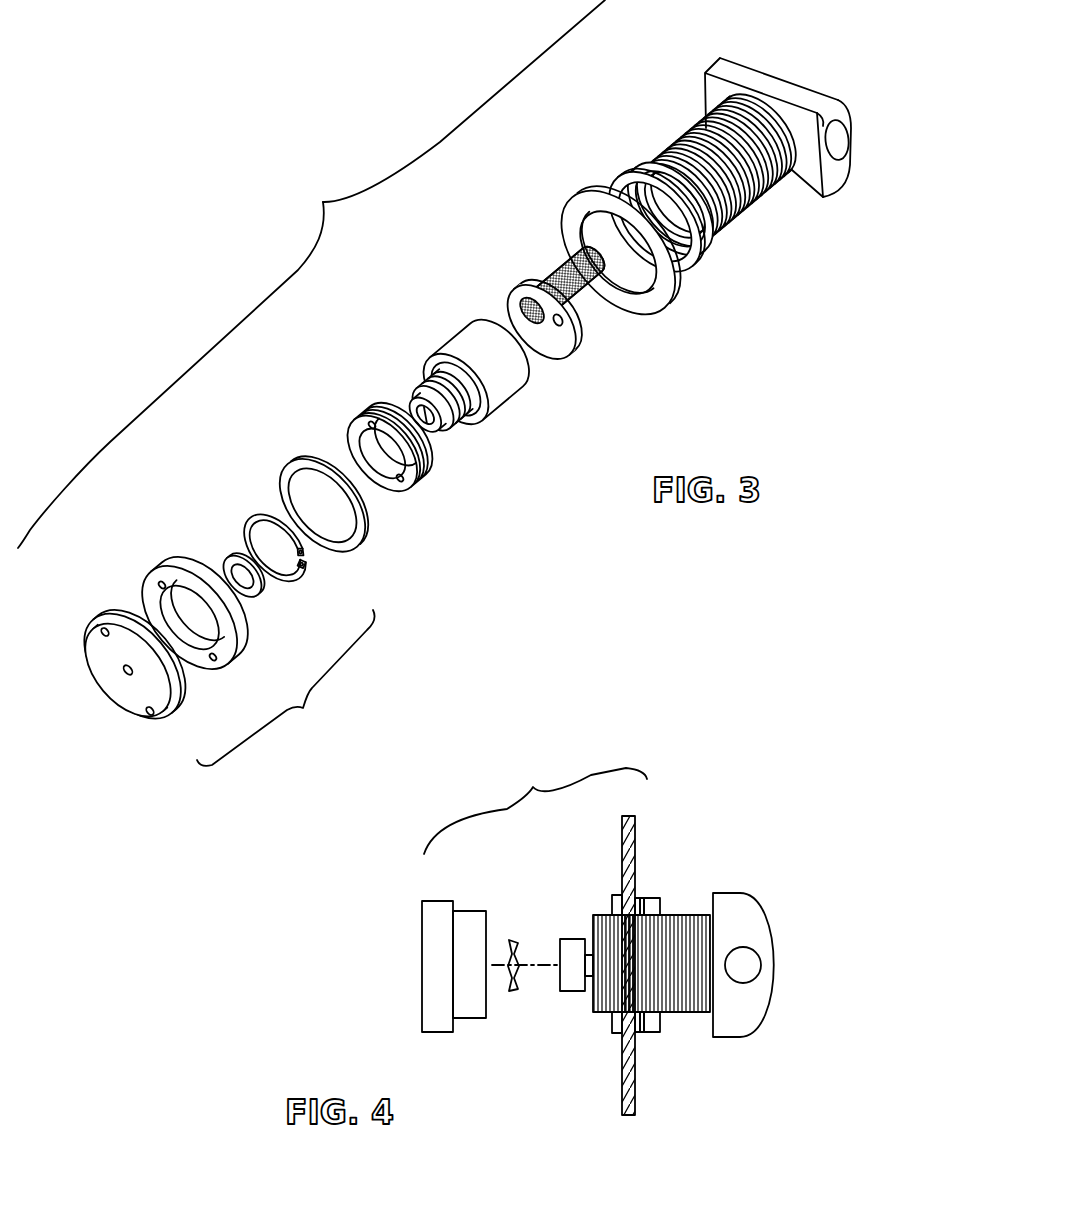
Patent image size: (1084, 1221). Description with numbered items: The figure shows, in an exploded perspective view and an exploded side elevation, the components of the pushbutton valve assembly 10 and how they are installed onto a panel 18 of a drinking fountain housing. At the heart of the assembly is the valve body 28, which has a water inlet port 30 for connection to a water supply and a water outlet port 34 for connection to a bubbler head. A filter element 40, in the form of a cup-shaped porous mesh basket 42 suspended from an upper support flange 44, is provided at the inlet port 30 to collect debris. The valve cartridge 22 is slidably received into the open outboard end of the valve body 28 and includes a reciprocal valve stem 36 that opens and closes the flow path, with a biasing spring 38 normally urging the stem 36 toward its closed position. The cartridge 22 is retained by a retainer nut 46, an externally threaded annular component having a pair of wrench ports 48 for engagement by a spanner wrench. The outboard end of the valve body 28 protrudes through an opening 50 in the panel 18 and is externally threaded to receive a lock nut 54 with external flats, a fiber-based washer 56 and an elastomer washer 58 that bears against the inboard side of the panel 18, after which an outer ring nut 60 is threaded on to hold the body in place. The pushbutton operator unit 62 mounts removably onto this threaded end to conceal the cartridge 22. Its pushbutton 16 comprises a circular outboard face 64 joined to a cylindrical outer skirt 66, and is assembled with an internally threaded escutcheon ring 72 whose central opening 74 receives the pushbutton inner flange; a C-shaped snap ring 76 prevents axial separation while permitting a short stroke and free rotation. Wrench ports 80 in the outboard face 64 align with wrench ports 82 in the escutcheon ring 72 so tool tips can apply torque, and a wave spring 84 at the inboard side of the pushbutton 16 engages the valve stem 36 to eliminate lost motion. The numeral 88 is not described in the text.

In FIG. 3, the pushbutton valve assembly 10 is at (323, 202).
In FIG. 4, the pushbutton valve assembly 10 is at (533, 787).
In FIG. 3, the pushbutton 16 is at (111, 661).
In FIG. 4, the pushbutton 16 is at (434, 930).
In FIG. 4, the panel 18 is at (636, 839).
In FIG. 3, the valve cartridge 22 is at (457, 366).
In FIG. 3, the valve body 28 is at (759, 130).
In FIG. 4, the valve body 28 is at (722, 963).
In FIG. 3, the water inlet port 30 is at (843, 123).
In FIG. 4, the water inlet port 30 is at (752, 972).
In FIG. 3, the water outlet port 34 is at (710, 62).
In FIG. 3, the valve stem 36 is at (443, 429).
In FIG. 4, the valve stem 36 is at (575, 939).
In FIG. 3, the biasing spring 38 is at (427, 373).
In FIG. 3, the filter element 40 is at (540, 275).
In FIG. 3, the porous mesh basket 42 is at (573, 318).
In FIG. 3, the upper support flange 44 is at (551, 301).
In FIG. 3, the retainer nut 46 is at (370, 435).
In FIG. 3, the wrench ports 48 is at (368, 424).
In FIG. 4, the opening 50 is at (631, 912).
In FIG. 3, the lock nut 54 is at (639, 163).
In FIG. 4, the lock nut 54 is at (655, 898).
In FIG. 3, the fiber-based washer 56 is at (603, 182).
In FIG. 4, the fiber-based washer 56 is at (644, 1031).
In FIG. 3, the elastomer washer 58 is at (566, 209).
In FIG. 4, the elastomer washer 58 is at (641, 1033).
In FIG. 3, the outer ring nut 60 is at (283, 464).
In FIG. 4, the outer ring nut 60 is at (614, 1023).
In FIG. 3, the pushbutton operator unit 62 is at (303, 708).
In FIG. 4, the pushbutton operator unit 62 is at (465, 884).
In FIG. 3, the outboard face 64 is at (117, 661).
In FIG. 3, the outer skirt 66 is at (122, 614).
In FIG. 4, the outer skirt 66 is at (441, 903).
In FIG. 3, the escutcheon ring 72 is at (196, 590).
In FIG. 3, the central opening 74 is at (192, 615).
In FIG. 3, the snap ring 76 is at (298, 586).
In FIG. 3, the wrench ports 80 is at (104, 635).
In FIG. 3, the wrench ports 82 is at (214, 661).
In FIG. 3, the wave spring 84 is at (263, 605).
In FIG. 4, the wave spring 84 is at (512, 990).
In FIG. 3, the hole 88 is at (161, 581).